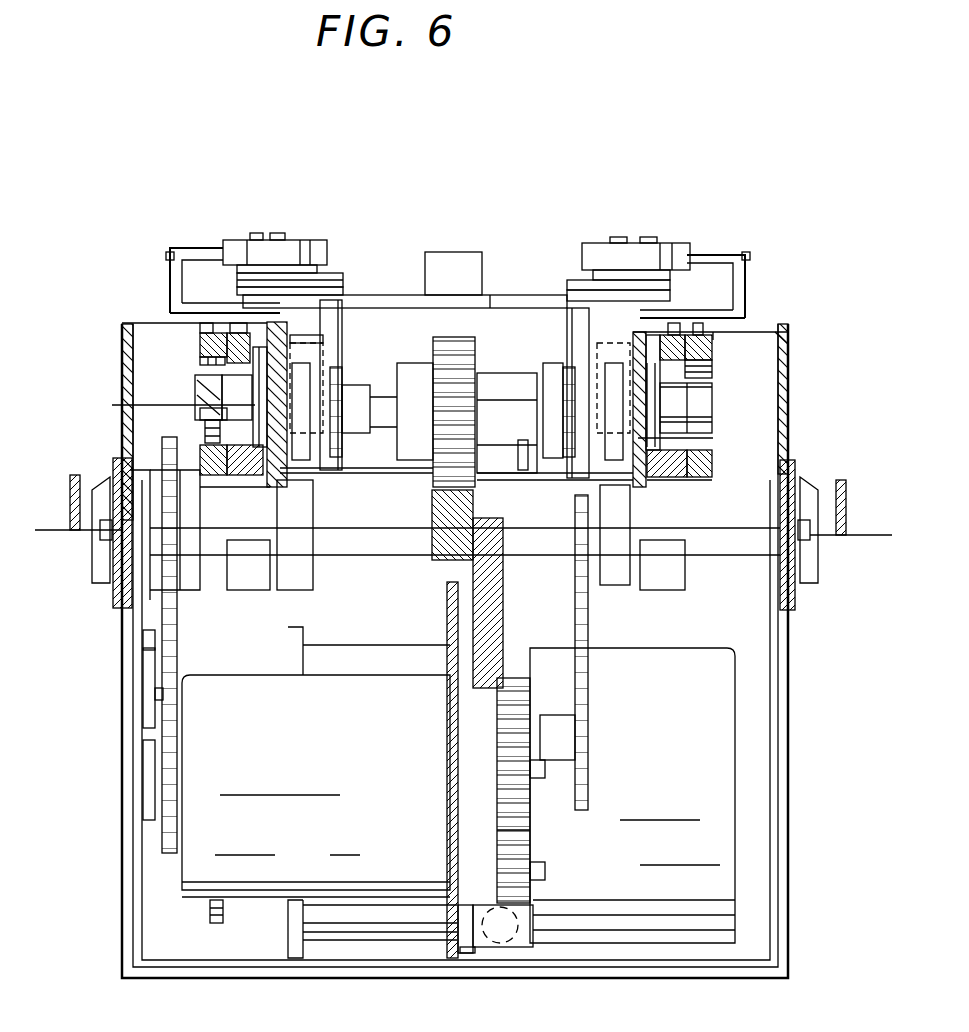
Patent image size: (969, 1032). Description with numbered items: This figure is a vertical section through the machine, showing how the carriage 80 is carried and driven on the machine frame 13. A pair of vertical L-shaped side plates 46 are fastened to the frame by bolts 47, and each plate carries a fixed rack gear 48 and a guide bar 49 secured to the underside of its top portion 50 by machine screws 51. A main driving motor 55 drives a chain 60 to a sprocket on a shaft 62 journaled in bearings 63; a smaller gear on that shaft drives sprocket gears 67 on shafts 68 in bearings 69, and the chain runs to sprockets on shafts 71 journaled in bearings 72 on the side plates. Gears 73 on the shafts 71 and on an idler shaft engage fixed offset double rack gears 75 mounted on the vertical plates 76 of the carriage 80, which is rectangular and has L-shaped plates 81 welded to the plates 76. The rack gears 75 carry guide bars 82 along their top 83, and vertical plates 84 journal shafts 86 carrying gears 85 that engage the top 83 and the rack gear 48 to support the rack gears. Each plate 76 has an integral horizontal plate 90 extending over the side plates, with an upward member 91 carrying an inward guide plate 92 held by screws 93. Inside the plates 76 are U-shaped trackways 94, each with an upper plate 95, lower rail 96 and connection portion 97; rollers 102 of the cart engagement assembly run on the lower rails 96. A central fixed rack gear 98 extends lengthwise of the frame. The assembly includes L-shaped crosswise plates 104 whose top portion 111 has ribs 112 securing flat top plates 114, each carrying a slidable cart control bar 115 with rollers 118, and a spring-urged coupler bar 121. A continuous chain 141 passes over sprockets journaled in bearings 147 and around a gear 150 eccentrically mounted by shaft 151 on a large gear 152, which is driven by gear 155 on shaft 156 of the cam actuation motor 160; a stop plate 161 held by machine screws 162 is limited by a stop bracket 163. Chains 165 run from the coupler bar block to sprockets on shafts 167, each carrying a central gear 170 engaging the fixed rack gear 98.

The machine frame 13 is at (770, 778).
The L-shaped side plates 46 is at (125, 357).
The bolts 47 is at (113, 588).
The fixed rack gear 48 is at (200, 340).
The guide bar 49 is at (225, 368).
The top portion 50 is at (760, 340).
The machine screws 51 is at (240, 328).
The main driving motor 55 is at (665, 794).
The chain 60 is at (223, 910).
The shaft 62 is at (165, 795).
The bearings 63 is at (150, 760).
The sprocket gears 67 is at (218, 640).
The shafts 68 is at (158, 692).
The bearings 69 is at (145, 665).
The shafts 71 is at (333, 563).
The bearings 72 is at (95, 573).
The gears 73 is at (238, 587).
The offset double rack gears 75 is at (243, 580).
The vertical bars or plates 76 is at (285, 328).
The carriage 80 is at (533, 279).
The L-shaped plates 81 is at (456, 535).
The guide bars 82 is at (200, 414).
The top 83 is at (250, 440).
The vertical plates 84 is at (248, 410).
The gears 85 is at (195, 392).
The shafts 86 is at (180, 409).
The horizontal outwardly extending plate 90 is at (282, 313).
The vertical upwardly extending member 91 is at (168, 258).
The horizontal inwardly extending guide plate 92 is at (197, 250).
The screws 93 is at (170, 252).
The U-shaped trackways 94 is at (313, 340).
The upper plate 95 is at (343, 378).
The lower rail 96 is at (318, 427).
The connection portion 97 is at (518, 455).
The central fixed rack gear 98 is at (432, 505).
The rollers 102 is at (380, 372).
The L-shaped crosswise-extending plate 104 is at (332, 318).
The top portion 111 is at (490, 300).
The ribs 112 is at (342, 288).
The flat horizontal top plates 114 is at (342, 278).
The cart control bar 115 is at (313, 270).
The rollers 118 is at (327, 242).
The coupler bar 121 is at (490, 230).
The continuous chain 141 is at (590, 690).
The bearings 147 is at (475, 605).
The gear 150 is at (575, 740).
The shaft 151 is at (533, 778).
The large gear 152 is at (455, 745).
The gear 155 is at (520, 845).
The shaft 156 is at (497, 800).
The cam actuation motor 160 is at (312, 774).
The stop plate 161 is at (533, 912).
The machine screws 162 is at (545, 870).
The stop bracket 163 is at (470, 953).
The chains 165 is at (342, 442).
The shafts 167 is at (540, 362).
The gear 170 is at (480, 322).